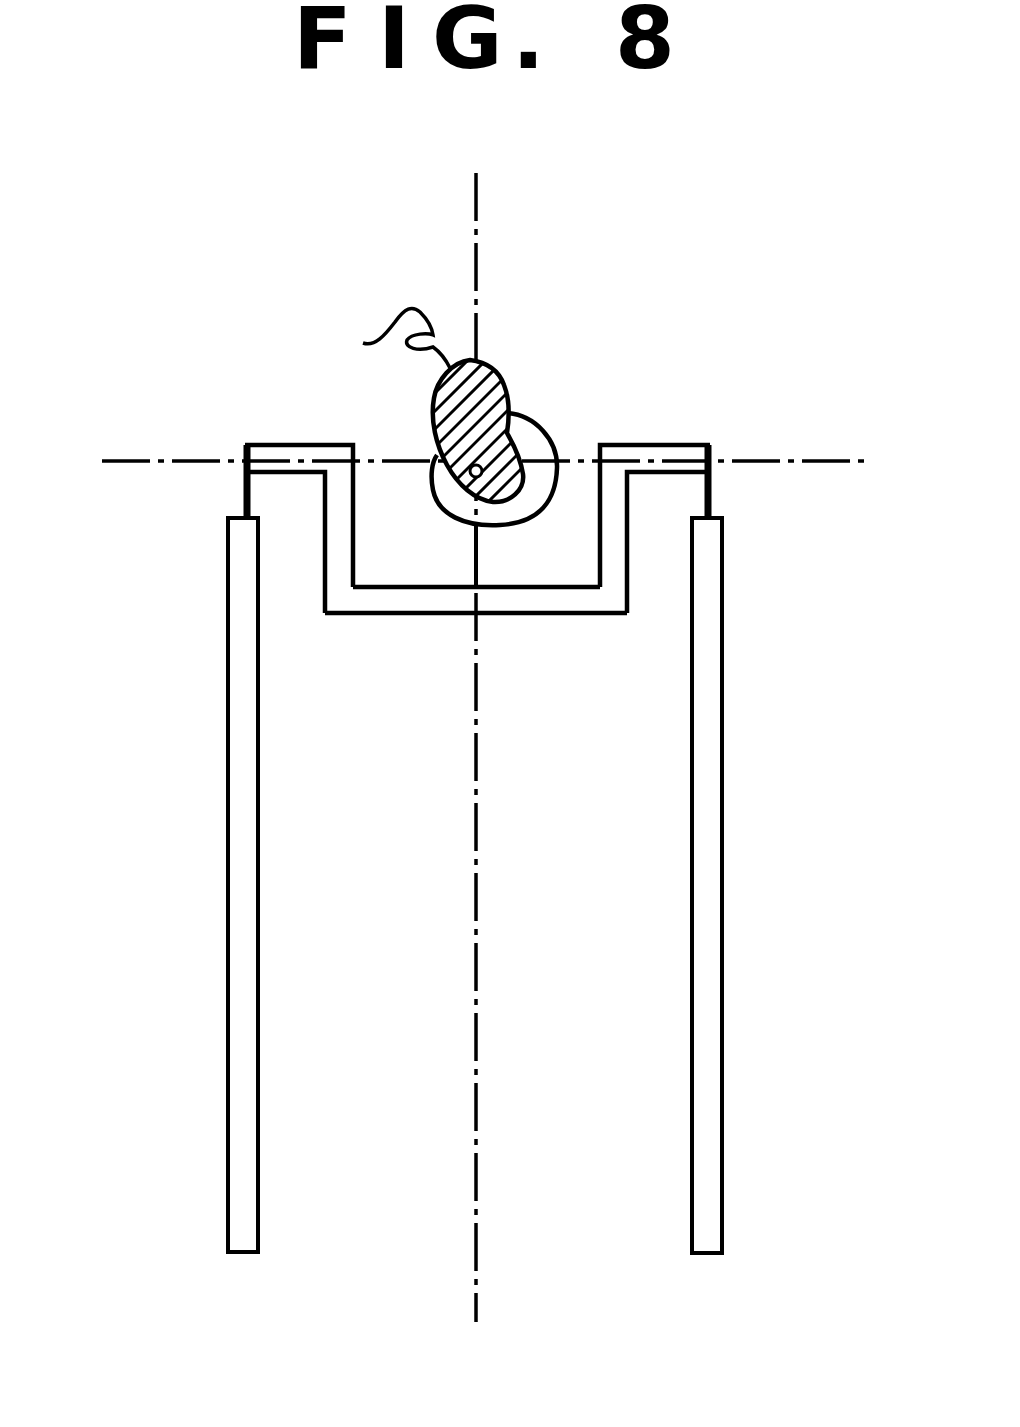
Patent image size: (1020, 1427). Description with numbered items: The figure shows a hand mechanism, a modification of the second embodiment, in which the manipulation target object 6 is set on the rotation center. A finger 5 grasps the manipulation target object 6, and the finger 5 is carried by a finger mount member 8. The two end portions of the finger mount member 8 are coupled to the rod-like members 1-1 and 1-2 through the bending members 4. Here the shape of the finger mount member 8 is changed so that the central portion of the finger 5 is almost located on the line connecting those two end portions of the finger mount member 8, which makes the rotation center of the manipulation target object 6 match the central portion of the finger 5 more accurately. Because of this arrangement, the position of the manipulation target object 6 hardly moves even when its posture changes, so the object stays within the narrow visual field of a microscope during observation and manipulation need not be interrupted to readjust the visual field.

The rod-like member 1-1 is at (228, 1078).
The rod-like member 1-2 is at (722, 923).
The bending member 4 is at (712, 492).
The finger 5 is at (553, 437).
The manipulation target object 6 is at (503, 371).
The finger mount member 8 is at (423, 614).